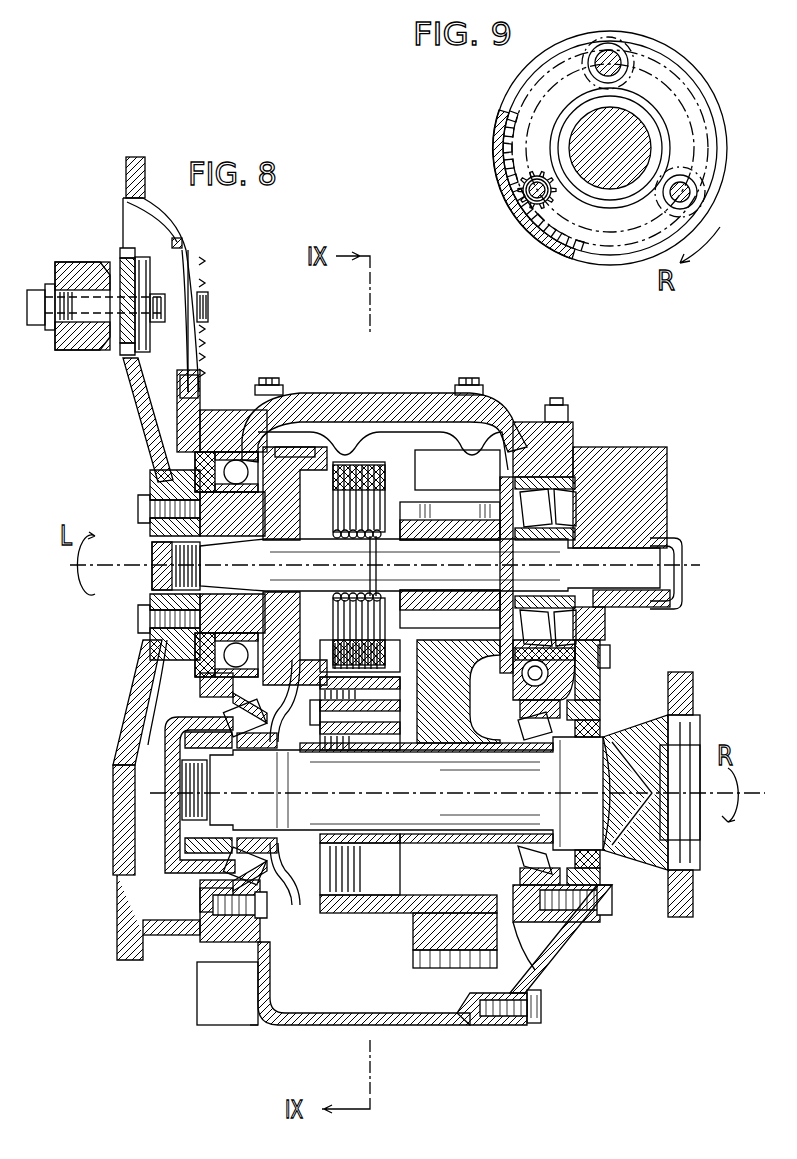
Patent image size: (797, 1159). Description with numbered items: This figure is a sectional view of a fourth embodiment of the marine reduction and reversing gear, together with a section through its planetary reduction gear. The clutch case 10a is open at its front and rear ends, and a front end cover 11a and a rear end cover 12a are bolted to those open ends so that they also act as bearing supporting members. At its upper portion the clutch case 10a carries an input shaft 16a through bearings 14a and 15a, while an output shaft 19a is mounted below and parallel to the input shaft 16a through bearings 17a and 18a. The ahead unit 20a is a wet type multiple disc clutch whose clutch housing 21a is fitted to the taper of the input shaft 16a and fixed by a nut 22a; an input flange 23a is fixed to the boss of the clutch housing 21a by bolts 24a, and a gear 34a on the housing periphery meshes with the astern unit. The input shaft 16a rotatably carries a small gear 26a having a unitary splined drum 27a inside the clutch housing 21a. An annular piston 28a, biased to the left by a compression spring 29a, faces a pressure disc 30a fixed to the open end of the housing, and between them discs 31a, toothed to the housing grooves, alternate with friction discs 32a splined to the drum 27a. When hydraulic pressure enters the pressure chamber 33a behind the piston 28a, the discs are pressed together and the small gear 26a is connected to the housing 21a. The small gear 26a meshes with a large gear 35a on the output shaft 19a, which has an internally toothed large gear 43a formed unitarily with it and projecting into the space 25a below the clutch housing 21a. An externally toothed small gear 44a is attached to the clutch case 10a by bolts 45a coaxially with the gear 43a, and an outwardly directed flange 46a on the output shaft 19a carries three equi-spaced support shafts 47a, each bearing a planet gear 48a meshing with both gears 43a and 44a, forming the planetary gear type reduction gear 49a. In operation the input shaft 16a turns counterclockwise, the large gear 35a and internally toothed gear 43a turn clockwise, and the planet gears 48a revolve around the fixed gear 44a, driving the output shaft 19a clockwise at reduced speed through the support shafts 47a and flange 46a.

In FIG. 8, the clutch case 10a is at (258, 1025).
In FIG. 8, the front end cover 11a is at (138, 965).
In FIG. 8, the rear end cover 12a is at (540, 952).
In FIG. 8, the bearing 14a is at (236, 460).
In FIG. 8, the bearing 15a is at (532, 500).
In FIG. 8, the input shaft 16a is at (170, 556).
In FIG. 8, the bearing 17a is at (205, 935).
In FIG. 8, the bearing 18a is at (600, 882).
In FIG. 8, the output shaft 19a is at (350, 818).
In FIG. 9, the output shaft 19a is at (640, 132).
In FIG. 8, the ahead unit 20a is at (370, 465).
In FIG. 8, the clutch housing 21a is at (338, 498).
In FIG. 8, the nut 22a is at (148, 586).
In FIG. 8, the input flange 23a is at (133, 399).
In FIG. 8, the bolts 24a is at (140, 622).
In FIG. 8, the space 25a is at (333, 990).
In FIG. 8, the small gear 26a is at (512, 432).
In FIG. 8, the drum 27a is at (408, 515).
In FIG. 8, the annular piston 28a is at (348, 525).
In FIG. 8, the compression spring 29a is at (362, 565).
In FIG. 8, the pressure disc 30a is at (383, 451).
In FIG. 8, the discs 31a is at (402, 470).
In FIG. 8, the friction discs 32a is at (365, 470).
In FIG. 8, the pressure chamber 33a is at (300, 478).
In FIG. 8, the gear 34a is at (283, 470).
In FIG. 8, the large gear 35a is at (447, 965).
In FIG. 8, the internally toothed large gear 43a is at (390, 900).
In FIG. 9, the internally toothed large gear 43a is at (505, 192).
In FIG. 8, the externally toothed small gear 44a is at (256, 860).
In FIG. 9, the externally toothed small gear 44a is at (540, 130).
In FIG. 8, the bolts 45a is at (262, 915).
In FIG. 8, the flange 46a is at (398, 808).
In FIG. 8, the support shafts 47a is at (398, 718).
In FIG. 9, the support shafts 47a is at (533, 200).
In FIG. 8, the planet gear 48a is at (342, 730).
In FIG. 9, the planet gear 48a is at (522, 182).
In FIG. 8, the planetary gear type reduction gear 49a is at (364, 934).
In FIG. 9, the planetary gear type reduction gear 49a is at (492, 92).